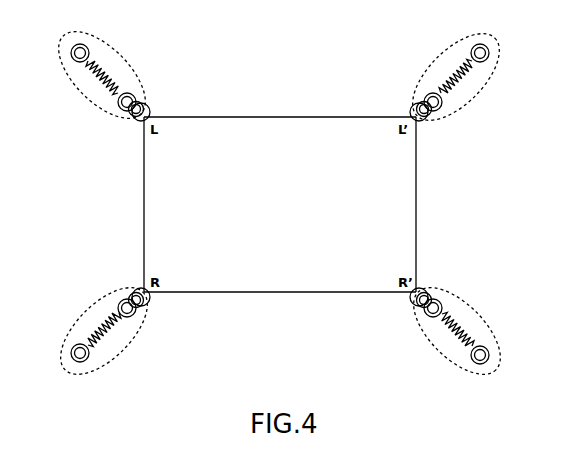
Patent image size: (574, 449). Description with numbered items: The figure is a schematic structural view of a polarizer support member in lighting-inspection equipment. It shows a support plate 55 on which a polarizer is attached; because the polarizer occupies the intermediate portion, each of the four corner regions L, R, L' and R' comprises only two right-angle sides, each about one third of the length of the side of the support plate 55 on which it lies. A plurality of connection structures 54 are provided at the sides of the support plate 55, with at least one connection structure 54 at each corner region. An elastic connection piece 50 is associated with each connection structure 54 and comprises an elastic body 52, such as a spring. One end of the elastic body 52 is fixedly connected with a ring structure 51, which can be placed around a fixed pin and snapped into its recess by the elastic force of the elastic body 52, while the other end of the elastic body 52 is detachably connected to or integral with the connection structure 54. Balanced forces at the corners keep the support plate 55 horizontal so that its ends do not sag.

The elastic connection piece 50 is at (96, 91).
The ring structure 51 is at (479, 52).
The elastic body 52 is at (453, 82).
The connection structure 54 is at (135, 125).
The support plate 55 is at (270, 123).